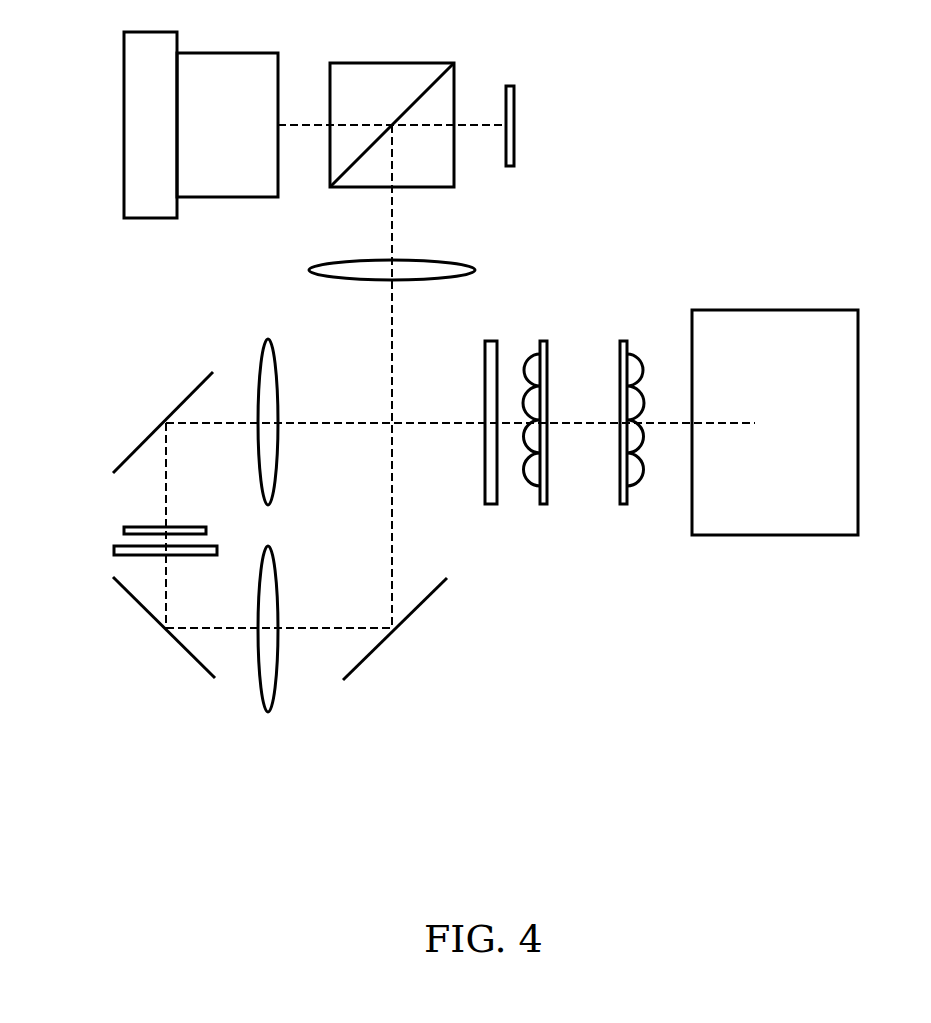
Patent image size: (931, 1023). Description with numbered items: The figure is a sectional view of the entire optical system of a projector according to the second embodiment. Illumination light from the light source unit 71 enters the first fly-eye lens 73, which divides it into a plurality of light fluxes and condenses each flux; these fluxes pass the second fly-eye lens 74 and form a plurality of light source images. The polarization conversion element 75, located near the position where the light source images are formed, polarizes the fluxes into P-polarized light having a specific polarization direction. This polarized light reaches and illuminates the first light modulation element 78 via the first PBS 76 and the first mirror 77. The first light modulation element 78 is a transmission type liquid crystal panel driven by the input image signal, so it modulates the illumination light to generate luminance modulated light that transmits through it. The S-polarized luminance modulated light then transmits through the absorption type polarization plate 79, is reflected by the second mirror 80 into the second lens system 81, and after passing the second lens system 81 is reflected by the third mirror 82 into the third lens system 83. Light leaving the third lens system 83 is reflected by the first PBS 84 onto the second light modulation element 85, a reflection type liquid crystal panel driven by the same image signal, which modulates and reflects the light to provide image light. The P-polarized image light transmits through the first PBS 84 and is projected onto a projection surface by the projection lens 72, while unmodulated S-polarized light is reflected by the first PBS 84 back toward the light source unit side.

The light source unit 71 is at (785, 328).
The projection lens 72 is at (195, 78).
The first fly-eye lens 73 is at (630, 343).
The second fly-eye lens 74 is at (550, 343).
The polarization conversion element 75 is at (500, 343).
The first PBS 76 is at (268, 356).
The first mirror 77 is at (187, 398).
The first light modulation element 78 is at (130, 525).
The absorption type polarization plate 79 is at (115, 557).
The second mirror 80 is at (183, 652).
The second lens system 81 is at (270, 692).
The third mirror 82 is at (425, 599).
The third lens system 83 is at (432, 270).
The first PBS 84 is at (372, 80).
The second light modulation element 85 is at (514, 110).